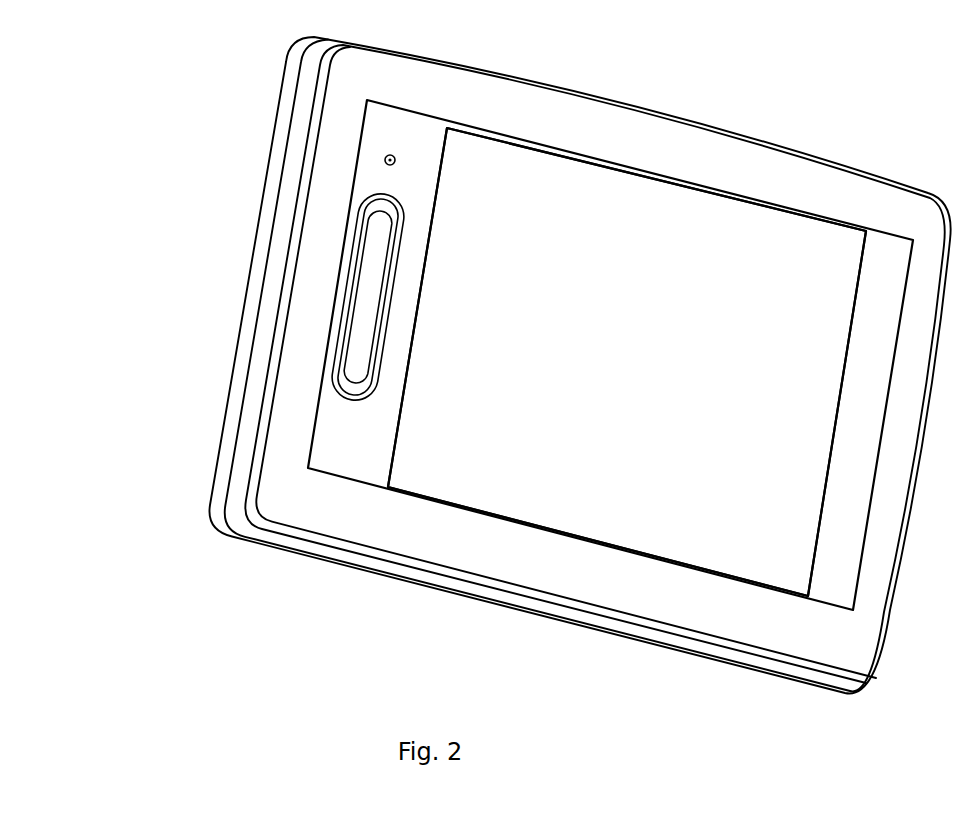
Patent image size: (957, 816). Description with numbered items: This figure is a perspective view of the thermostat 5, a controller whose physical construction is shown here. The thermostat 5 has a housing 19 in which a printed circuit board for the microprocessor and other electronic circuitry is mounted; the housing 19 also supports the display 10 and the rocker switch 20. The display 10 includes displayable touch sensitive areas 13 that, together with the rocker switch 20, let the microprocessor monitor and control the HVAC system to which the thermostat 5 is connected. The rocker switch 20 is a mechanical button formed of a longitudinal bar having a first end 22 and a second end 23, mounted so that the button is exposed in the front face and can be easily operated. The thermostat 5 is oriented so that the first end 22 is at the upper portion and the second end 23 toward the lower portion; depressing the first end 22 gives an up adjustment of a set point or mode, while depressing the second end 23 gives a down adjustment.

The thermostat 5 is at (290, 566).
The display 10 is at (729, 440).
The touch sensitive area 13 is at (777, 285).
The housing 19 is at (284, 196).
The rocker switch 20 is at (327, 337).
The first end 22 is at (370, 210).
The second end 23 is at (347, 377).